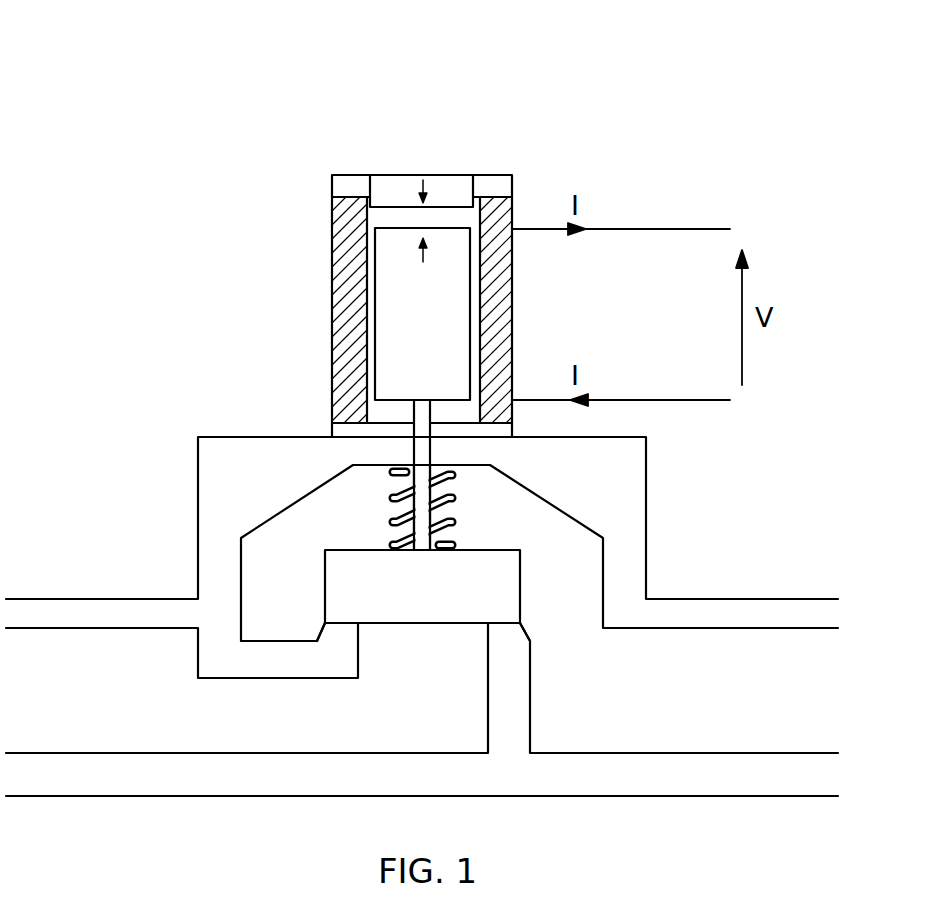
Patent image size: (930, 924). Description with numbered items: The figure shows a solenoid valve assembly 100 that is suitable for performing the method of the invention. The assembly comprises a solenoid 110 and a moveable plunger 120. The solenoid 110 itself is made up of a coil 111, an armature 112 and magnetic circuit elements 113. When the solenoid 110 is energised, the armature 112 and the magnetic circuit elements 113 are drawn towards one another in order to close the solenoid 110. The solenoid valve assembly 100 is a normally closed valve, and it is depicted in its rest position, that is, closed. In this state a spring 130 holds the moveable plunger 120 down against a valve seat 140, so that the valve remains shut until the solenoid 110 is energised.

The solenoid valve assembly 100 is at (131, 106).
The solenoid 110 is at (394, 323).
The coil 111 is at (494, 330).
The armature 112 is at (398, 372).
The magnetic circuit elements 113 is at (491, 185).
The moveable plunger 120 is at (467, 565).
The spring 130 is at (393, 499).
The valve seat 140 is at (345, 627).